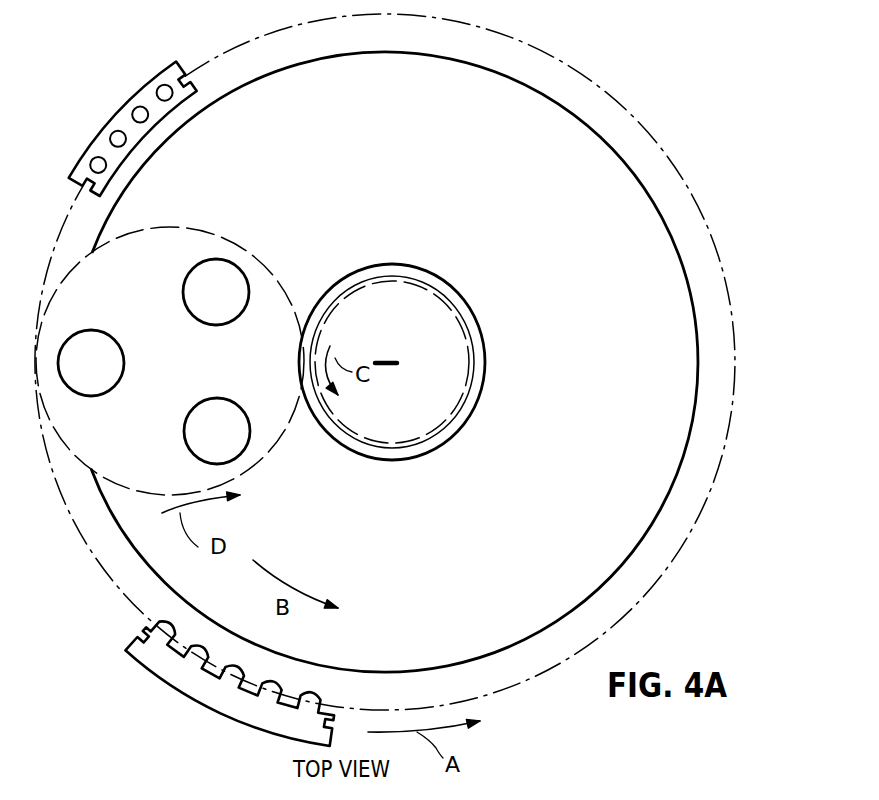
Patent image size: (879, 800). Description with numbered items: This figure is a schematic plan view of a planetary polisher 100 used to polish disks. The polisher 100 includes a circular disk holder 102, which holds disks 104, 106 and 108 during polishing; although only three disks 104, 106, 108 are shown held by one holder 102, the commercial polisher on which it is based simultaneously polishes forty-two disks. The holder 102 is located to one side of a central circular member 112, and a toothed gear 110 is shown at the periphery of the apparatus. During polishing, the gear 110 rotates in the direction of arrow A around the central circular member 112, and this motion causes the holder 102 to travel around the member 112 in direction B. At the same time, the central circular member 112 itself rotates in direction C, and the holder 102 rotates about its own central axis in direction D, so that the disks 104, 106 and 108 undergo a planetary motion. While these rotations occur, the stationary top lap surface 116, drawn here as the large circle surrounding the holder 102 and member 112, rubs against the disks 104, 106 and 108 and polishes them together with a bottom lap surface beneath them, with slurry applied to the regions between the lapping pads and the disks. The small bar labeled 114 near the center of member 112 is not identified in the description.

The planetary polisher 100 is at (663, 105).
The circular disk holder 102 is at (252, 257).
The disk 104 is at (215, 325).
The disk 106 is at (217, 398).
The disk 108 is at (124, 366).
The gear 110 is at (173, 673).
The central circular member 112 is at (485, 362).
The slurry delivery nozzle 114 is at (387, 366).
The top lap surface 116 is at (632, 555).